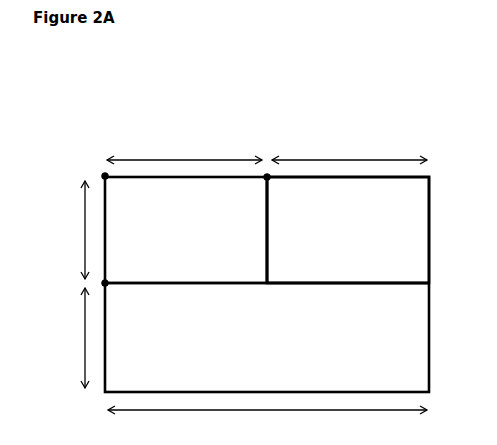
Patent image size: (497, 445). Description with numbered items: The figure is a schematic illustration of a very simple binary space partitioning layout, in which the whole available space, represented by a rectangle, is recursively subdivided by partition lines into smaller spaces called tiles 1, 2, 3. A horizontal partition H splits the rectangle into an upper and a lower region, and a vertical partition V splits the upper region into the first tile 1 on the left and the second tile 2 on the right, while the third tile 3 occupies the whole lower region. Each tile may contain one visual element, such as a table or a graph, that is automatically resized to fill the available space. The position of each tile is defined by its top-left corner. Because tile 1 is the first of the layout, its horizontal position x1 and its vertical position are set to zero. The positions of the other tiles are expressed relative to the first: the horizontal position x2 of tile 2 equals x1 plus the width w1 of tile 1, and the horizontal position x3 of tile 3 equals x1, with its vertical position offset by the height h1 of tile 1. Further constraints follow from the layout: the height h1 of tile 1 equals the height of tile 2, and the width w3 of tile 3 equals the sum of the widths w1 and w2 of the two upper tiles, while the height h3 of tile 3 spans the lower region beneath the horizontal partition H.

The tile 1 is at (225, 230).
The tile 2 is at (348, 230).
The tile 3 is at (267, 284).
The vertical partition V is at (270, 223).
The horizontal partition H is at (347, 285).
The horizontal position of tile 1 x1 is at (105, 176).
The horizontal position of tile 2 x2 is at (267, 177).
The horizontal position of tile 3 x3 is at (107, 287).
The width of tile 1 w1 is at (184, 147).
The width of tile 2 w2 is at (349, 147).
The width of tile 3 w3 is at (267, 422).
The height of tile 1 h1 is at (55, 230).
The height of tile 3 h3 is at (58, 338).